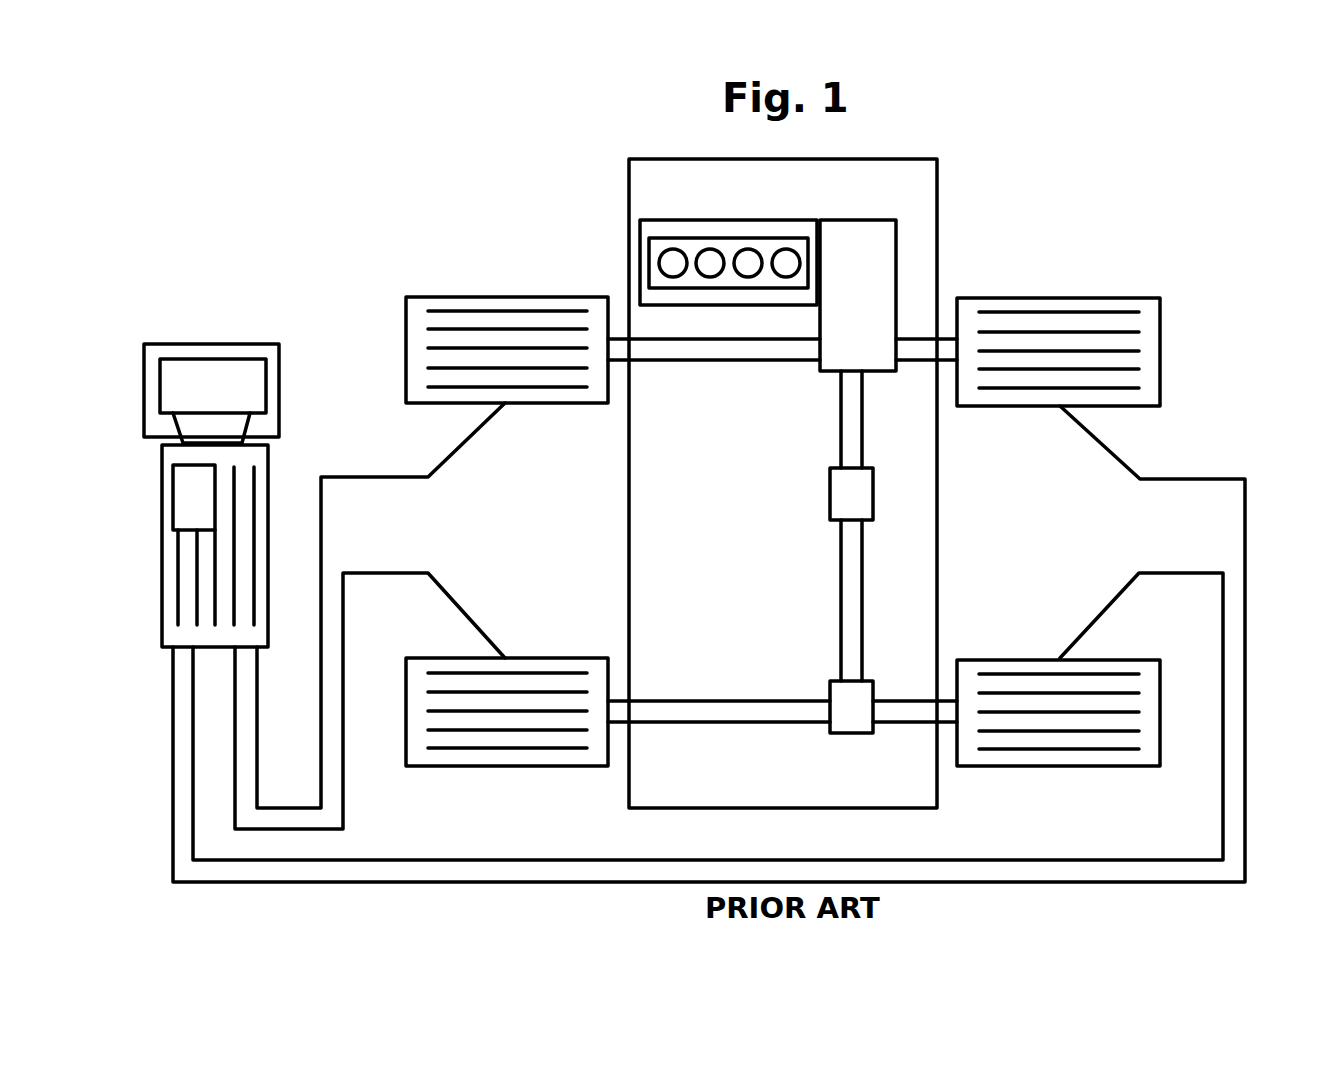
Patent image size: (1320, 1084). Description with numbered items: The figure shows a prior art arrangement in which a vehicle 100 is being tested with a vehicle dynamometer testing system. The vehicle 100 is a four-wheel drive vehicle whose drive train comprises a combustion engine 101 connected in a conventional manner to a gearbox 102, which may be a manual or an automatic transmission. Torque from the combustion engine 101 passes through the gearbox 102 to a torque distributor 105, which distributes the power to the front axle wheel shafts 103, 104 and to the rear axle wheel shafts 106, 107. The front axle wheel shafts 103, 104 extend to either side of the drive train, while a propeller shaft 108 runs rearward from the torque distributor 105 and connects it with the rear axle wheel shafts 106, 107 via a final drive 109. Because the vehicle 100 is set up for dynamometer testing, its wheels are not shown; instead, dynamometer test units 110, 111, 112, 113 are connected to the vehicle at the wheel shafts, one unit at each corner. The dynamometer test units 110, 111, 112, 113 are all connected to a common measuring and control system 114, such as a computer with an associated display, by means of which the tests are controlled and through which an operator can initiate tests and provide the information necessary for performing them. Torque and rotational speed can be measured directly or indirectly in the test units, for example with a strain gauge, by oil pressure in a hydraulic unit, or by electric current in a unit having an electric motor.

The vehicle 100 is at (873, 170).
The combustion engine 101 is at (652, 233).
The gearbox 102 is at (882, 275).
The front axle wheel shaft 103 is at (650, 350).
The front axle wheel shaft 104 is at (932, 360).
The torque distributor 105 is at (841, 490).
The rear axle wheel shaft 106 is at (650, 712).
The rear axle wheel shaft 107 is at (893, 712).
The propeller shaft 108 is at (852, 585).
The final drive 109 is at (853, 713).
The dynamometer test unit 110 is at (480, 307).
The dynamometer test unit 111 is at (437, 755).
The dynamometer test unit 112 is at (1150, 352).
The dynamometer test unit 113 is at (1012, 755).
The measuring and control system 114 is at (258, 486).